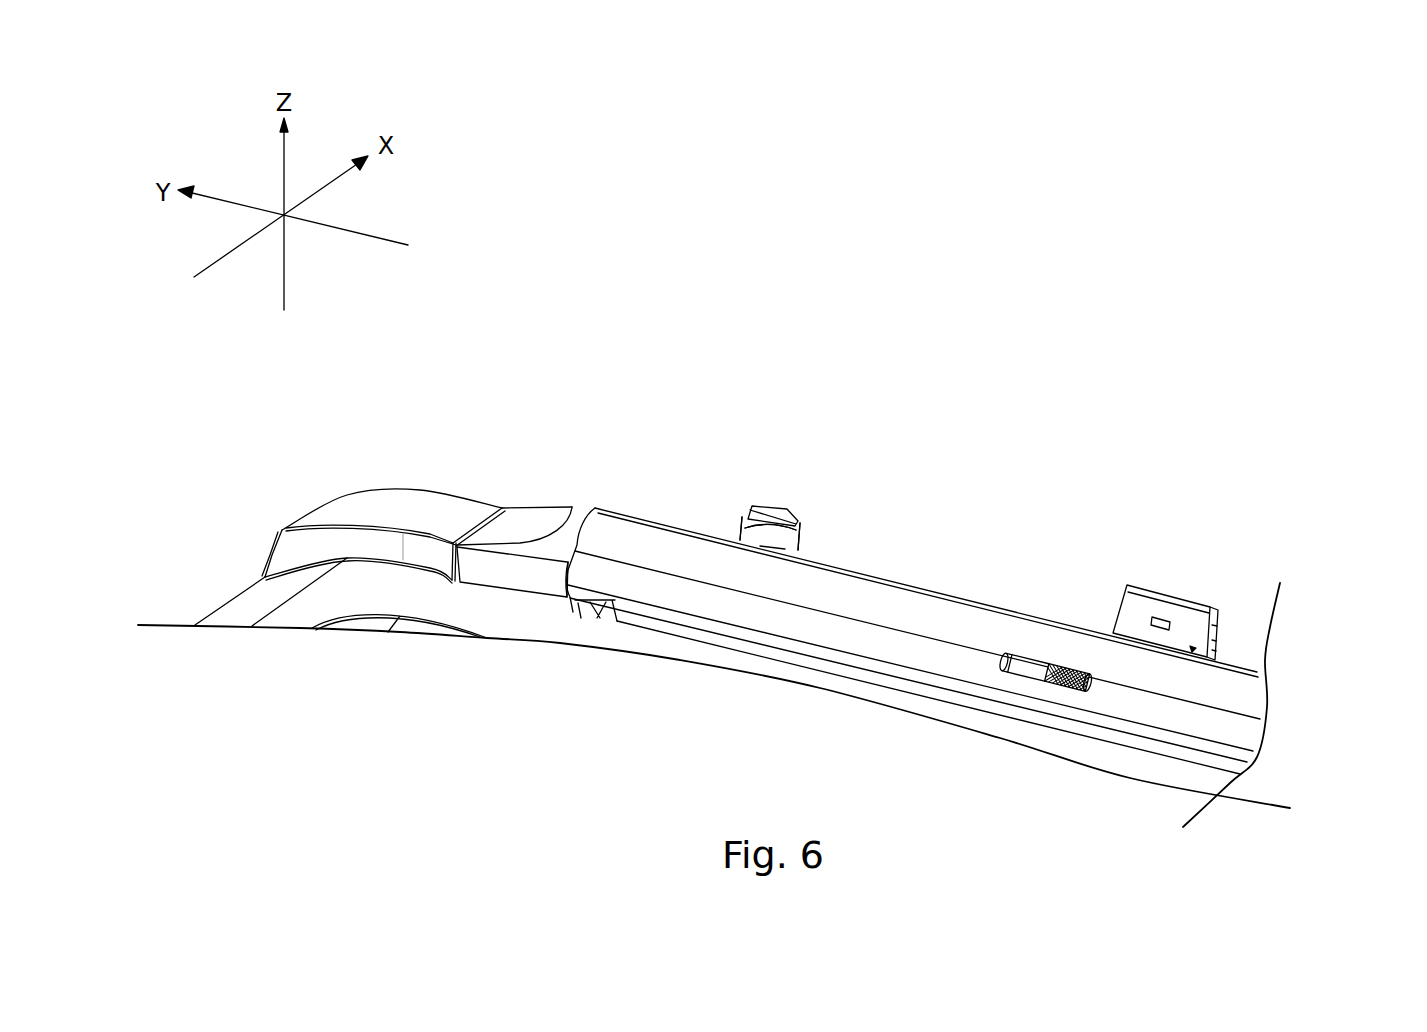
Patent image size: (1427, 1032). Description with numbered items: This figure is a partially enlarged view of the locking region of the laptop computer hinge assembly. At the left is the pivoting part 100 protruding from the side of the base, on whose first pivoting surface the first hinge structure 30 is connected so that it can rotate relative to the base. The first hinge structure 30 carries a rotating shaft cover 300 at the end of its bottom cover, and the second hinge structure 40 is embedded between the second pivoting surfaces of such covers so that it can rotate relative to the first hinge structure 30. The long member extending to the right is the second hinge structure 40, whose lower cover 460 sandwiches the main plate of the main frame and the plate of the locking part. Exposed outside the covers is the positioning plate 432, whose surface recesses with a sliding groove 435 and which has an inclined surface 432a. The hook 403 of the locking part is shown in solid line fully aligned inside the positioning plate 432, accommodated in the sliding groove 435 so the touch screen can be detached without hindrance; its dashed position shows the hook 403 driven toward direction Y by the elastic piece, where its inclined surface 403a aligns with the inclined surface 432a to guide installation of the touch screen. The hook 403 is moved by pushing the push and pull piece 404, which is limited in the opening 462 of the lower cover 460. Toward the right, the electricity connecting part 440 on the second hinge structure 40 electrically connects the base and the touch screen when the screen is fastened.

The first hinge structure 30 is at (522, 588).
The second hinge structure 40 is at (1262, 690).
The pivoting part 100 is at (432, 505).
The rotating shaft cover 300 is at (528, 518).
The hook 403 is at (780, 542).
The inclined surface 403a is at (723, 530).
The push and pull piece 404 is at (1065, 667).
The positioning plate 432 is at (780, 434).
The inclined surface 432a is at (753, 503).
The sliding groove 435 is at (812, 514).
The electricity connecting part 440 is at (1160, 600).
The lower cover 460 is at (915, 612).
The opening 462 is at (1003, 657).